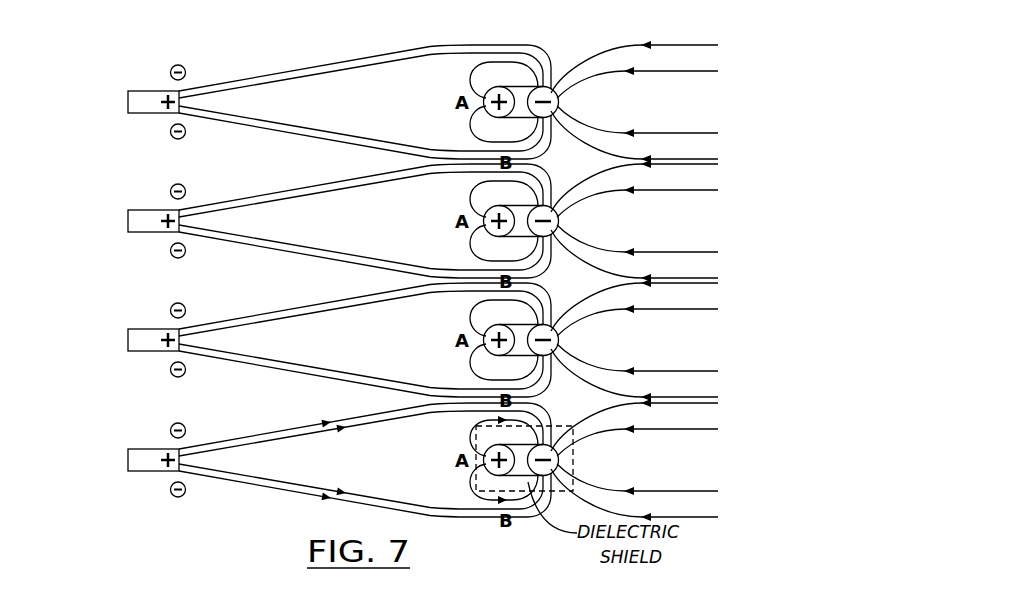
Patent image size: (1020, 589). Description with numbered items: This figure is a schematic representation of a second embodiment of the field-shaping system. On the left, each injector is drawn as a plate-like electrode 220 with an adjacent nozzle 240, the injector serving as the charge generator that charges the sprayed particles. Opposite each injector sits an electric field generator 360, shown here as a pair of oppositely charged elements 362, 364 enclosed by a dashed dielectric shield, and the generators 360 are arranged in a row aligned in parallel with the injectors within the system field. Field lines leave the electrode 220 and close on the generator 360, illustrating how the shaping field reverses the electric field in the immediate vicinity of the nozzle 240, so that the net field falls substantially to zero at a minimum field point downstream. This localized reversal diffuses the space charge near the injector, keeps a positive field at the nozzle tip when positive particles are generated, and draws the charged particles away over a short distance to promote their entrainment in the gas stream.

The electrode 220 is at (145, 471).
The nozzle 240 is at (178, 497).
The electric field generator 360 is at (520, 493).
The positive dipole electrode 362 is at (490, 487).
The negative dipole electrode 364 is at (558, 458).